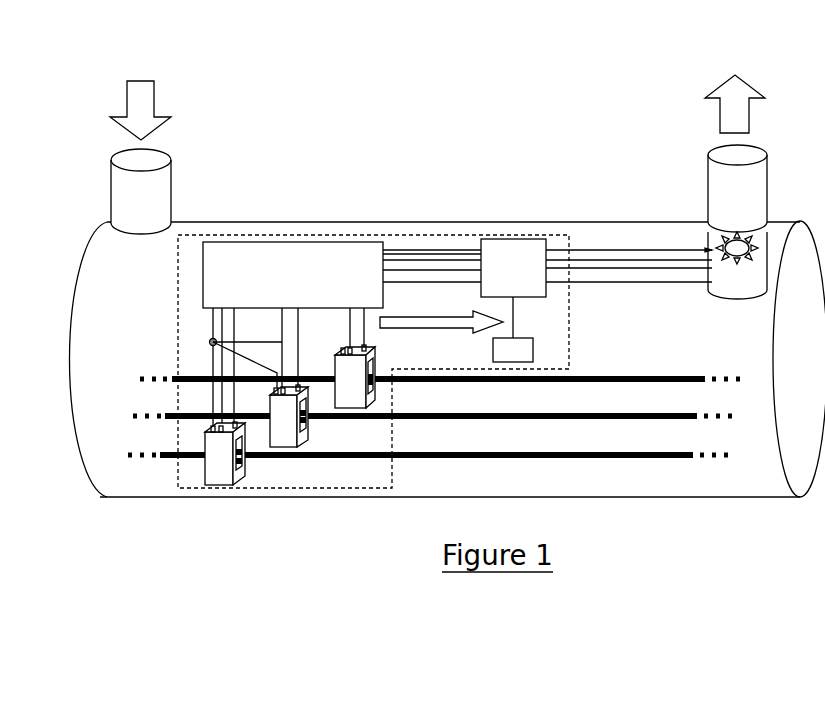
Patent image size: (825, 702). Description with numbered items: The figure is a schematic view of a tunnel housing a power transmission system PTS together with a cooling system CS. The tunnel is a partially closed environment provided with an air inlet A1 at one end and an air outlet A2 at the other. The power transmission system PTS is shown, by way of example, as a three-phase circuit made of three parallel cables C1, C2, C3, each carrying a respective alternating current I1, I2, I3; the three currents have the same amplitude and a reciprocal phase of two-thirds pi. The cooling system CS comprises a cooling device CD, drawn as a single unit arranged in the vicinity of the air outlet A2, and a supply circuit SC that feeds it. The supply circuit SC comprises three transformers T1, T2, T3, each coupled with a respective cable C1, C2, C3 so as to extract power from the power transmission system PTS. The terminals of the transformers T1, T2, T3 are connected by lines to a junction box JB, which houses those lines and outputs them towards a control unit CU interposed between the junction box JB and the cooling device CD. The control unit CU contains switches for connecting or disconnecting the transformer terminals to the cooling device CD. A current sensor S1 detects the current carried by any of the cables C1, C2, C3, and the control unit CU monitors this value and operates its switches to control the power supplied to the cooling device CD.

The cooling system CS is at (651, 321).
The air inlet A1 is at (172, 187).
The air outlet A2 is at (763, 191).
The cooling device CD is at (736, 265).
The supply circuit SC is at (177, 323).
The junction box JB is at (342, 334).
The control unit CU is at (546, 288).
The current sensor S1 is at (513, 350).
The power transmission system PTS is at (434, 435).
The cable C1 is at (468, 457).
The cable C2 is at (485, 418).
The cable C3 is at (502, 381).
The alternating current I1 is at (601, 441).
The alternating current I2 is at (612, 403).
The alternating current I3 is at (626, 364).
The transformer T1 is at (225, 453).
The transformer T2 is at (289, 416).
The transformer T3 is at (355, 376).